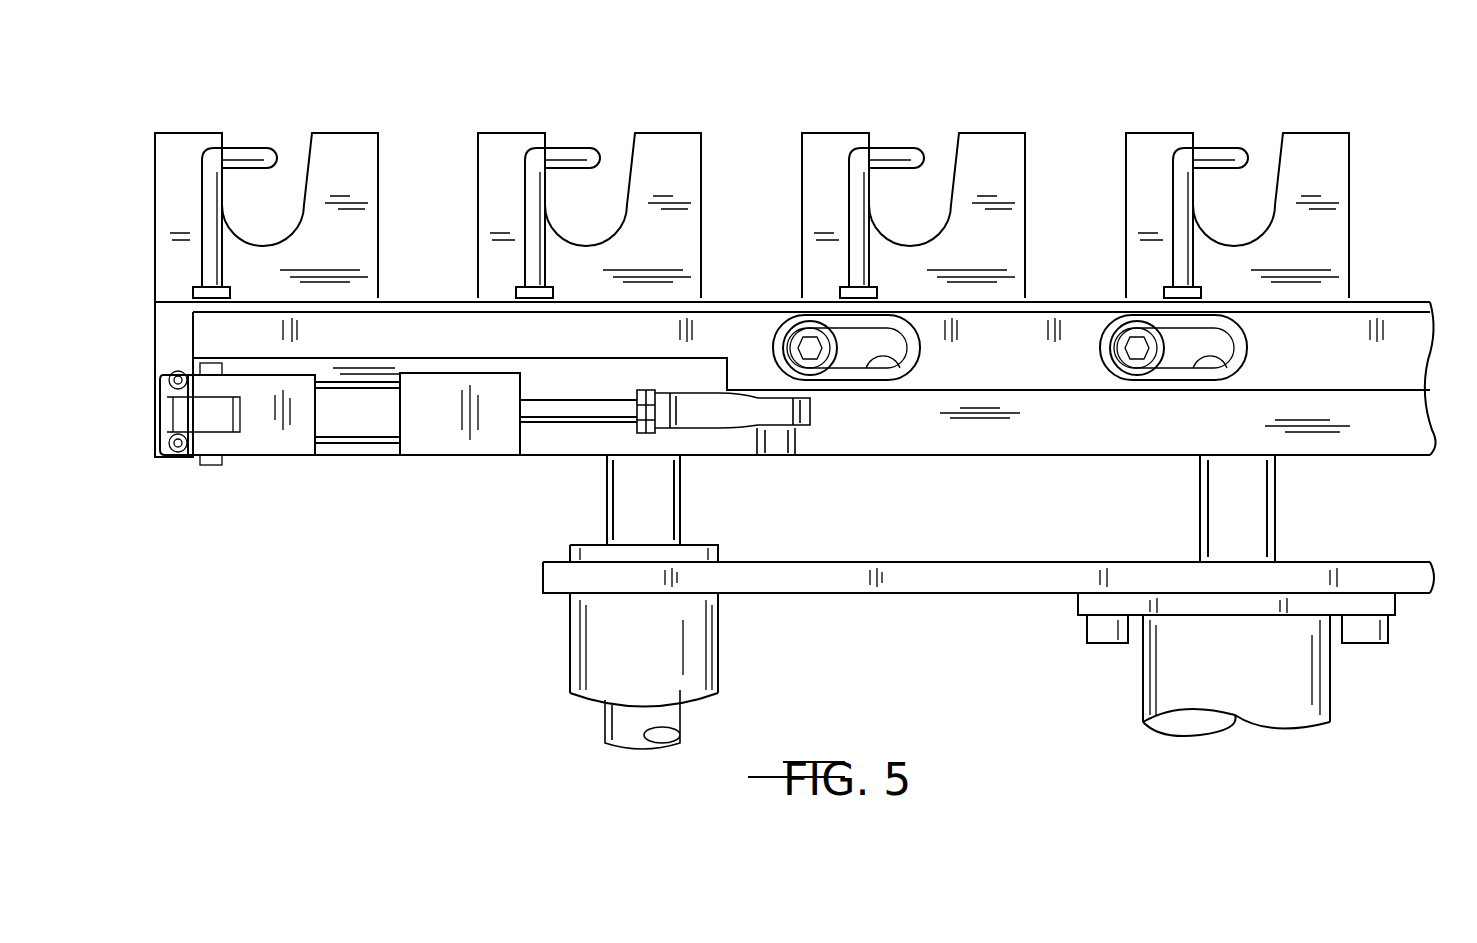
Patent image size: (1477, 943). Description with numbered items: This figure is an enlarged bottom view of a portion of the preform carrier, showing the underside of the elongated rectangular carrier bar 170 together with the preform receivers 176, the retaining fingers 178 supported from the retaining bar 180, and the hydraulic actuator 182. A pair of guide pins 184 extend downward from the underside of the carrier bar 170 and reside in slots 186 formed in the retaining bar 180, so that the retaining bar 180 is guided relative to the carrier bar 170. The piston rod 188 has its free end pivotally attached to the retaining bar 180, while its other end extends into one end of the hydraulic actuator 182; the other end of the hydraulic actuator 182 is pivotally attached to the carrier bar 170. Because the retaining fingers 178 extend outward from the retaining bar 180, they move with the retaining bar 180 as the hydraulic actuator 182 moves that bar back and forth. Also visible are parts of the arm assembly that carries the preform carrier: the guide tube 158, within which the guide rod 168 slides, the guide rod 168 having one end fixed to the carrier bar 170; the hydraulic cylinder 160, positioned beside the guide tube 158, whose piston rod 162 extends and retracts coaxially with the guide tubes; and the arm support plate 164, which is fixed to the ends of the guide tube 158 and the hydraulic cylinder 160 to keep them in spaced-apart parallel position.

The guide tube 158 is at (720, 647).
The hydraulic cylinder 160 is at (1143, 685).
The piston rod 162 is at (1278, 533).
The arm support plate 164 is at (903, 562).
The guide rod 168 is at (683, 491).
The carrier bar 170 is at (1432, 433).
The preform receiver 176 is at (348, 135).
The retaining finger 178 is at (250, 150).
The retaining bar 180 is at (417, 298).
The hydraulic actuator 182 is at (437, 455).
The guide pin 184 is at (812, 358).
The slot 186 is at (895, 368).
The piston rod 188 is at (571, 418).